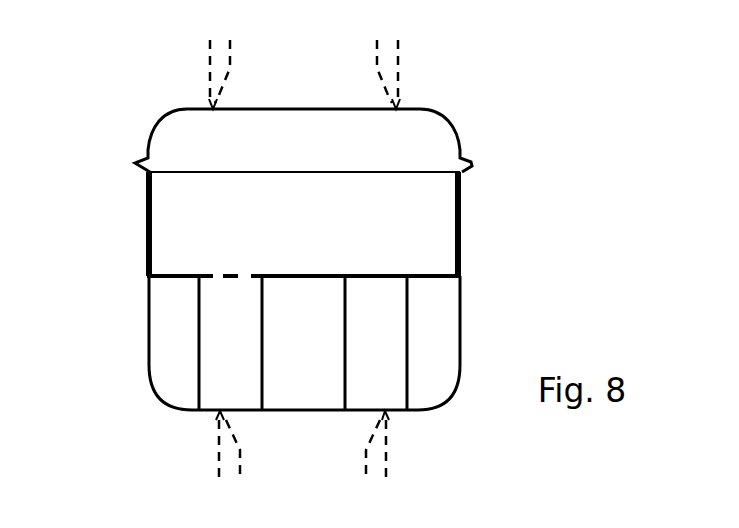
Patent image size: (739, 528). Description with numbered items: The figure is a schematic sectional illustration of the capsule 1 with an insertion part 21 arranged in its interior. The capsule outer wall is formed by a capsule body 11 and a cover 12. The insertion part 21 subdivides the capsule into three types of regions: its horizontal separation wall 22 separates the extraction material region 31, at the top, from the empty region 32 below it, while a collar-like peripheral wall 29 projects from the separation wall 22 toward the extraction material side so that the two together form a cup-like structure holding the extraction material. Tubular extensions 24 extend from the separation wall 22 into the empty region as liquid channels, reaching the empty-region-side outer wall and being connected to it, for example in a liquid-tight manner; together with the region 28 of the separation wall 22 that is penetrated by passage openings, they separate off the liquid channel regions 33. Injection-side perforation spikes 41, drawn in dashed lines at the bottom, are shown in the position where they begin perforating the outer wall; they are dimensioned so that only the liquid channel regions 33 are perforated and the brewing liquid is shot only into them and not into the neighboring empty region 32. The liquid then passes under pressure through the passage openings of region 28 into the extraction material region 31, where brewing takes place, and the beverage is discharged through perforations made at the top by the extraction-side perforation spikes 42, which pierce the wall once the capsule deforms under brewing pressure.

The capsule 1 is at (106, 150).
The capsule body 11 is at (162, 399).
The cover 12 is at (437, 110).
The insertion part 21 is at (462, 270).
The separation wall 22 is at (283, 277).
The tubular extensions 24 is at (407, 330).
The region with passage openings 28 is at (230, 274).
The peripheral wall 29 is at (455, 232).
The extraction material region 31 is at (353, 220).
The empty region 32 is at (289, 372).
The liquid channel regions 33 is at (375, 362).
The injection-side perforation spikes 41 is at (215, 452).
The extraction-side perforation spikes 42 is at (210, 82).